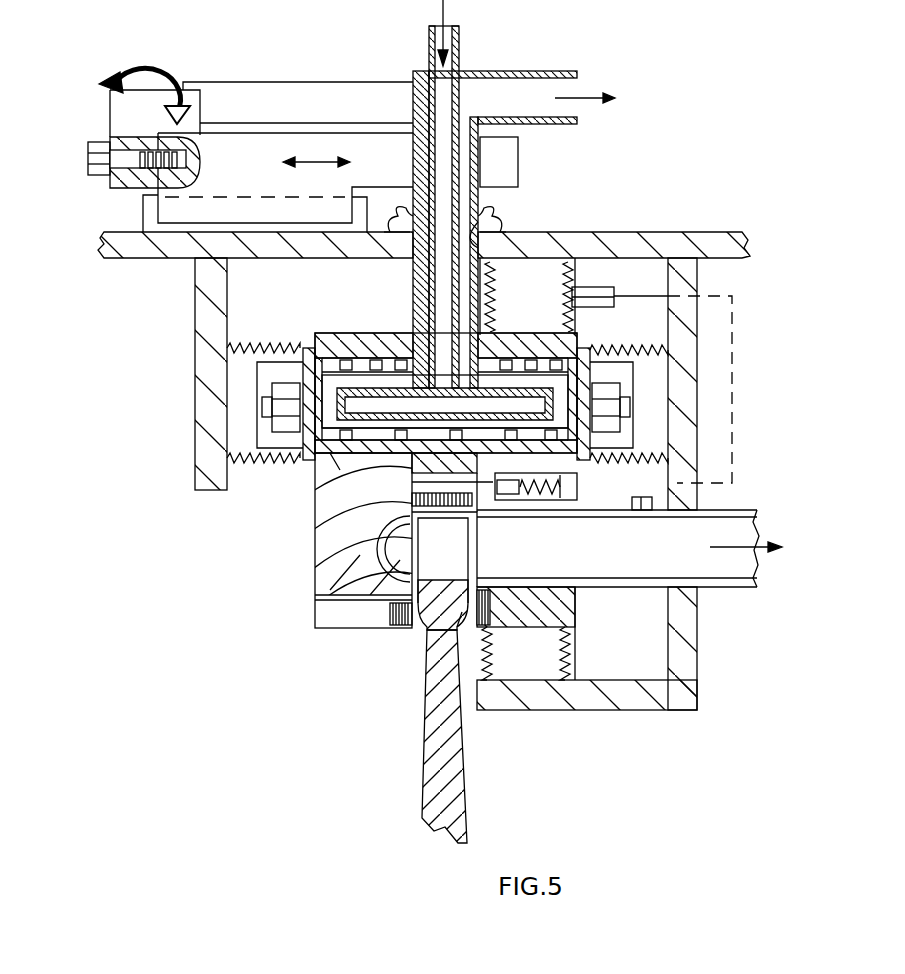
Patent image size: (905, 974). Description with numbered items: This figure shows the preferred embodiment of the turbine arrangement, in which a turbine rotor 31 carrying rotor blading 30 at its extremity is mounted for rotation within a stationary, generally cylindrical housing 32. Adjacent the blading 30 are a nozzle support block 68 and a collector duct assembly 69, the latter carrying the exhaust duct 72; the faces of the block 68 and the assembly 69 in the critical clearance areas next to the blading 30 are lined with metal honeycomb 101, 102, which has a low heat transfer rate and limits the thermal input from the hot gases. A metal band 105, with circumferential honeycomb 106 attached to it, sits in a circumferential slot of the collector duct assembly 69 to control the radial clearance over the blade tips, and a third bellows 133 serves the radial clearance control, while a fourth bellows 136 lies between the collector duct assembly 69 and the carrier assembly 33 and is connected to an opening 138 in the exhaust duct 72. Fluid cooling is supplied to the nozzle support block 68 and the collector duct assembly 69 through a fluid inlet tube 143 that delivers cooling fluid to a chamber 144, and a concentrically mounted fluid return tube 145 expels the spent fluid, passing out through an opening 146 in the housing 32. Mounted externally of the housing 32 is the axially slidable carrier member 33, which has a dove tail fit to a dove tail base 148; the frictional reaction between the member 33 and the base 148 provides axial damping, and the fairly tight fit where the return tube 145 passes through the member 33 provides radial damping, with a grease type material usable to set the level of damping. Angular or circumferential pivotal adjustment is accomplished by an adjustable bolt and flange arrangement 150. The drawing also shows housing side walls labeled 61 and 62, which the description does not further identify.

The rotor blading 30 is at (460, 566).
The turbine rotor 31 is at (447, 784).
The housing 32 is at (634, 240).
The carrier assembly 33 is at (394, 169).
The housing right wall 61 is at (650, 410).
The housing left wall 62 is at (243, 403).
The nozzle support block 68 is at (338, 572).
The collector duct assembly 69 is at (578, 336).
The exhaust duct 72 is at (733, 512).
The metal honeycomb 101 is at (392, 630).
The metal honeycomb 102 is at (462, 612).
The metal band 105 is at (410, 456).
The circumferential honeycomb 106 is at (405, 492).
The third bellows 133 is at (560, 670).
The fourth bellows 136 is at (574, 296).
The opening 138 is at (640, 497).
The fluid inlet tube 143 is at (460, 52).
The chamber 144 is at (323, 396).
The fluid return tube 145 is at (560, 72).
The opening 146 is at (475, 232).
The dove tail base 148 is at (150, 216).
The adjustable bolt and flange arrangement 150 is at (103, 117).